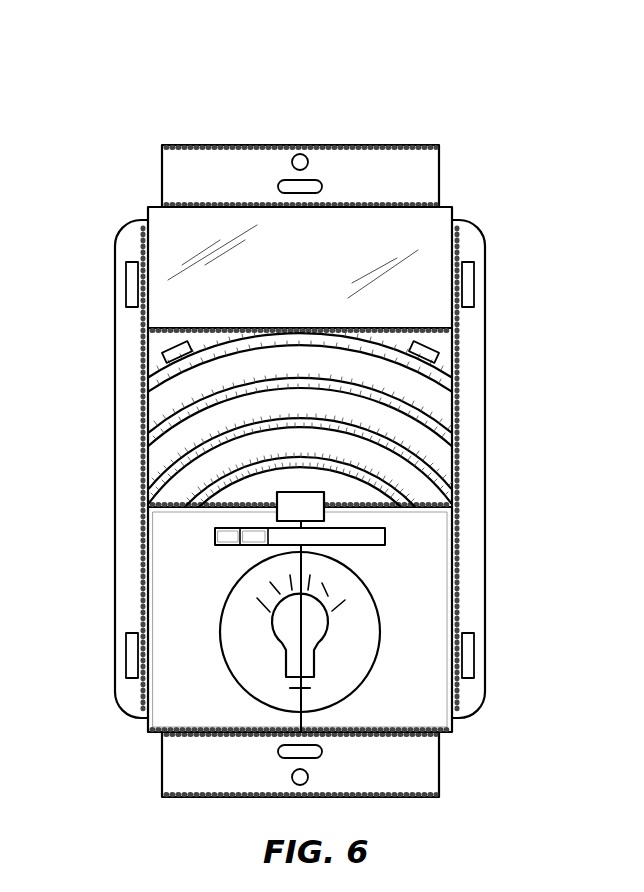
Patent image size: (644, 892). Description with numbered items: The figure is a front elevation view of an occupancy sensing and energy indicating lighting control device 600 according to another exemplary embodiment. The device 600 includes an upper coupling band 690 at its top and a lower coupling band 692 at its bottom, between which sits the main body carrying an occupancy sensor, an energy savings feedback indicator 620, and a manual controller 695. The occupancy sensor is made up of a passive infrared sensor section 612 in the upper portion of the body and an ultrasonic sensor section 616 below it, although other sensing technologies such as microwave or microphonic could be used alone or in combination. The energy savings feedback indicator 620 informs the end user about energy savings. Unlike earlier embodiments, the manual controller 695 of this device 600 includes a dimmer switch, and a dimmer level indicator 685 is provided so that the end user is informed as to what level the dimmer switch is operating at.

The occupancy sensing and energy indicating lighting control device 600 is at (535, 86).
The upper coupling band 690 is at (427, 163).
The lower coupling band 692 is at (428, 760).
The passive infrared sensor section 612 is at (440, 212).
The ultrasonic sensor section 616 is at (442, 405).
The energy savings feedback indicator 620 is at (325, 500).
The dimmer level indicator 685 is at (233, 548).
The manual controller 695 is at (176, 642).